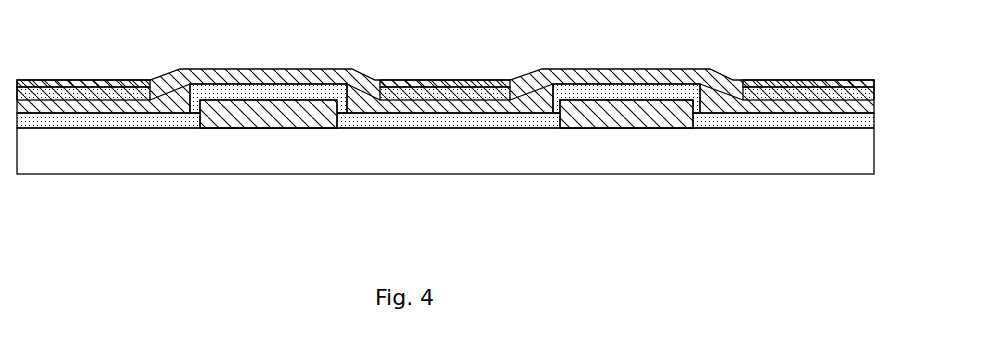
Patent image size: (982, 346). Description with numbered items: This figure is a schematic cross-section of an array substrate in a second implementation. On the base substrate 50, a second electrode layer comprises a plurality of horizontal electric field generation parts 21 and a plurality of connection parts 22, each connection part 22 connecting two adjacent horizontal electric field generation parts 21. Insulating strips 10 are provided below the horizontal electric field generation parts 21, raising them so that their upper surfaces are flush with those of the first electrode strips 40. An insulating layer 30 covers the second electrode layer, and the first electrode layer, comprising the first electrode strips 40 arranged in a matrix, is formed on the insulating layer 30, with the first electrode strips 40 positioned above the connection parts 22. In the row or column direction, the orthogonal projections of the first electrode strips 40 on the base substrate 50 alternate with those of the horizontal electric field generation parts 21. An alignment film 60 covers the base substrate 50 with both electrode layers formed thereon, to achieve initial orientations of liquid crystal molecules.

The insulating strip 10 is at (228, 112).
The horizontal electric field generation part 21 is at (280, 90).
The connection part 22 is at (122, 120).
The insulating layer 30 is at (355, 92).
The first electrode strip 40 is at (82, 87).
The base substrate 50 is at (446, 163).
The alignment film 60 is at (135, 85).